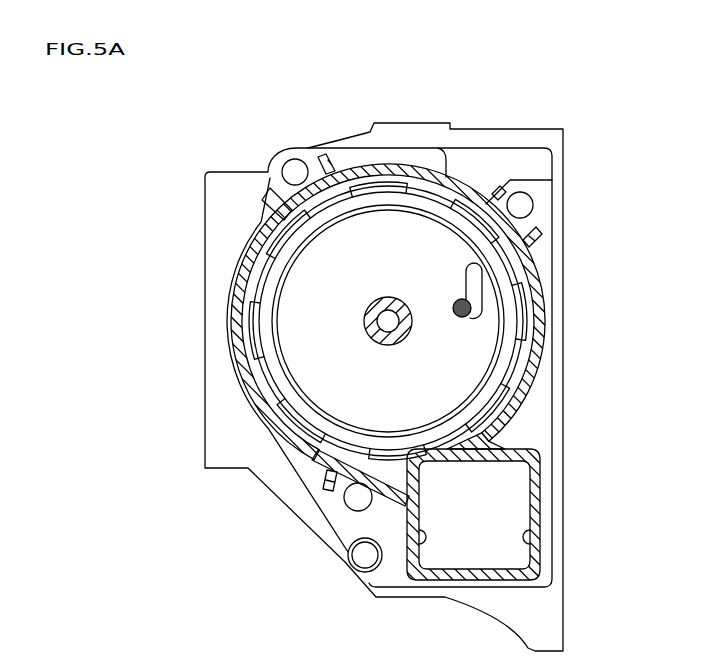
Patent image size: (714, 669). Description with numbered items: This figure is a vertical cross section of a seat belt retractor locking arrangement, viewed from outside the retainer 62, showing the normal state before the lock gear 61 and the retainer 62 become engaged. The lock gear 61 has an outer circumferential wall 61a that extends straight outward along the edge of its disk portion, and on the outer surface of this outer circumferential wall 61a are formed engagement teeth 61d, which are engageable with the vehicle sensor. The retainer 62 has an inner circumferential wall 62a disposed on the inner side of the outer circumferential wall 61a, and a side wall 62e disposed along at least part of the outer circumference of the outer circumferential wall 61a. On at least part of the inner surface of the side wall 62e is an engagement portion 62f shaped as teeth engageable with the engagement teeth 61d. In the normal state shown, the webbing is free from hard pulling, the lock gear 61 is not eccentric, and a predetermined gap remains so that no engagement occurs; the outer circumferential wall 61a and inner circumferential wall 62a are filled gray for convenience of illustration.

The retainer 62 is at (258, 149).
The side wall 62e is at (237, 321).
The inner circumferential wall 62a is at (283, 284).
The engagement portion 62f is at (402, 200).
The lock gear 61 is at (530, 322).
The outer circumferential wall 61a is at (386, 436).
The engagement teeth 61d is at (430, 470).